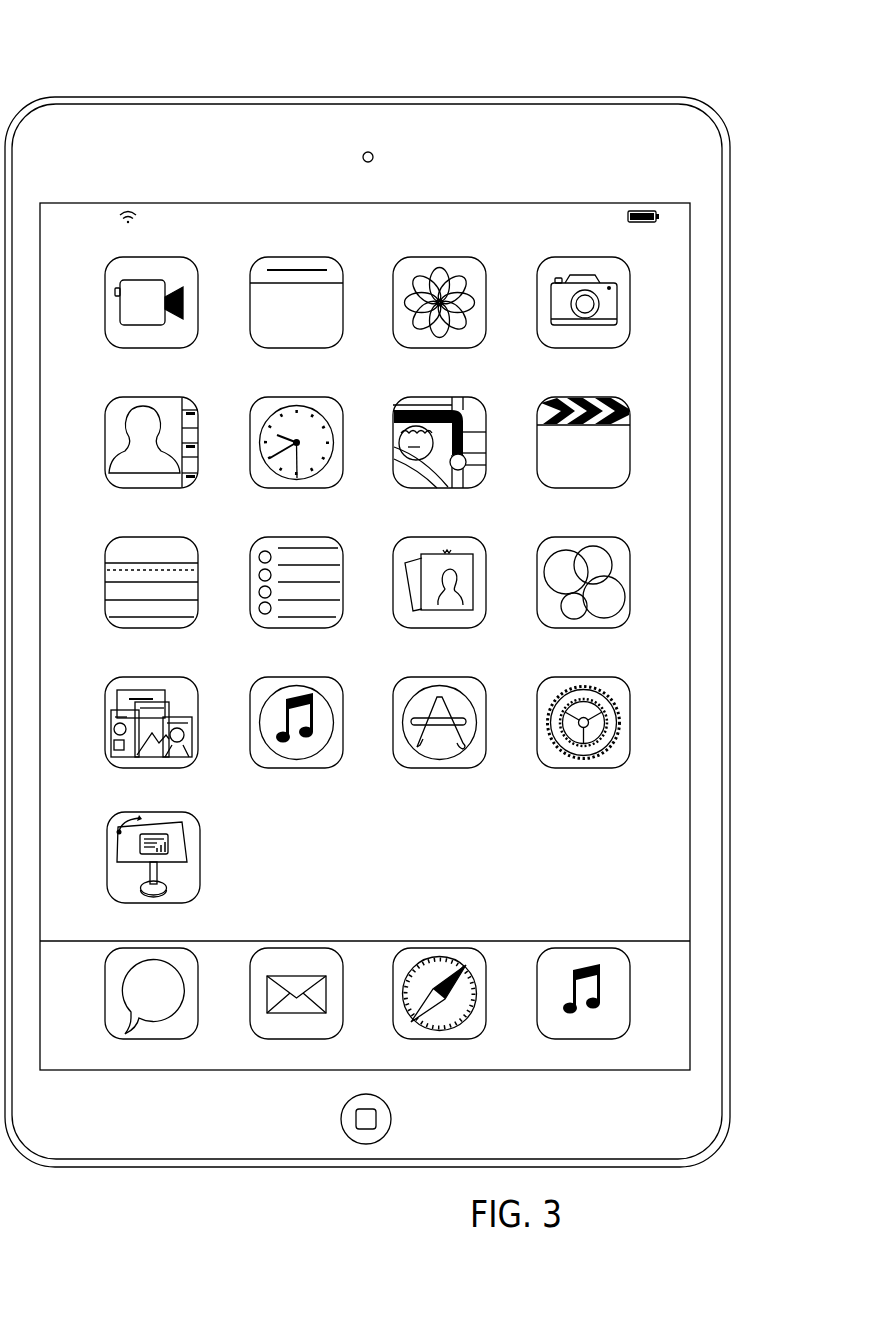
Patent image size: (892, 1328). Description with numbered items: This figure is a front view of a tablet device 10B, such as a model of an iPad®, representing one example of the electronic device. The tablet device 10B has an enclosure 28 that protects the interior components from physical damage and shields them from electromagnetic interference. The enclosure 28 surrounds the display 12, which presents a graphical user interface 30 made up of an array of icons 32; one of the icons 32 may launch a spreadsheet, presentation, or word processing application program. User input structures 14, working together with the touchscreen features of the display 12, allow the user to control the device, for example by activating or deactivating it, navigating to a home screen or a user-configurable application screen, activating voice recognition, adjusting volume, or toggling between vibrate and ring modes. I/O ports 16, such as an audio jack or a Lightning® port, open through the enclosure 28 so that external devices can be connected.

The tablet device 10B is at (126, 31).
The display 12 is at (690, 838).
The user input structures 14 is at (625, 97).
The I/O ports 16 is at (108, 97).
The enclosure 28 is at (731, 593).
The graphical user interface 30 is at (656, 794).
The icons 32 is at (198, 858).